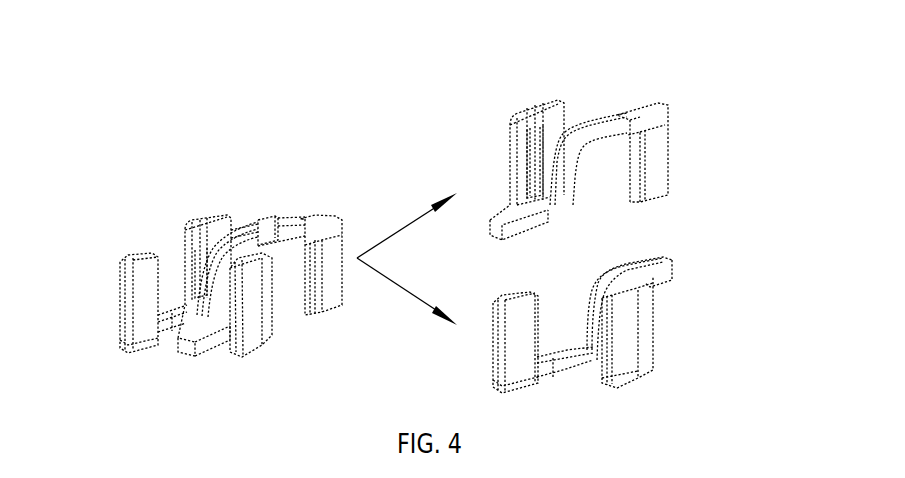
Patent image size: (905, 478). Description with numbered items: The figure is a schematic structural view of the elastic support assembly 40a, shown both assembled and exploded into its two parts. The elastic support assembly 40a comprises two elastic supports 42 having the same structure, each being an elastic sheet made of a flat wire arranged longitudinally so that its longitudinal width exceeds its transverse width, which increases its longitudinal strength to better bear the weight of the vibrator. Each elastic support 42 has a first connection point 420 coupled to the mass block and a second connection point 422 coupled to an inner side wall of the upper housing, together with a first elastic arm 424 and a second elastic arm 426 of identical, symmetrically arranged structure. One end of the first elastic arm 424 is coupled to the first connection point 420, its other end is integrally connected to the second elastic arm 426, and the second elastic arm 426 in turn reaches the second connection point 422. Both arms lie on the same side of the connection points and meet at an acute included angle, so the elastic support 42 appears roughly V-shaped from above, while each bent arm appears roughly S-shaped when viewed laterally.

The elastic support assembly 40a is at (146, 191).
The elastic support 42 is at (708, 71).
The first connection point 420 is at (664, 171).
The second connection point 422 is at (558, 110).
The first elastic arm 424 is at (567, 203).
The second elastic arm 426 is at (510, 147).